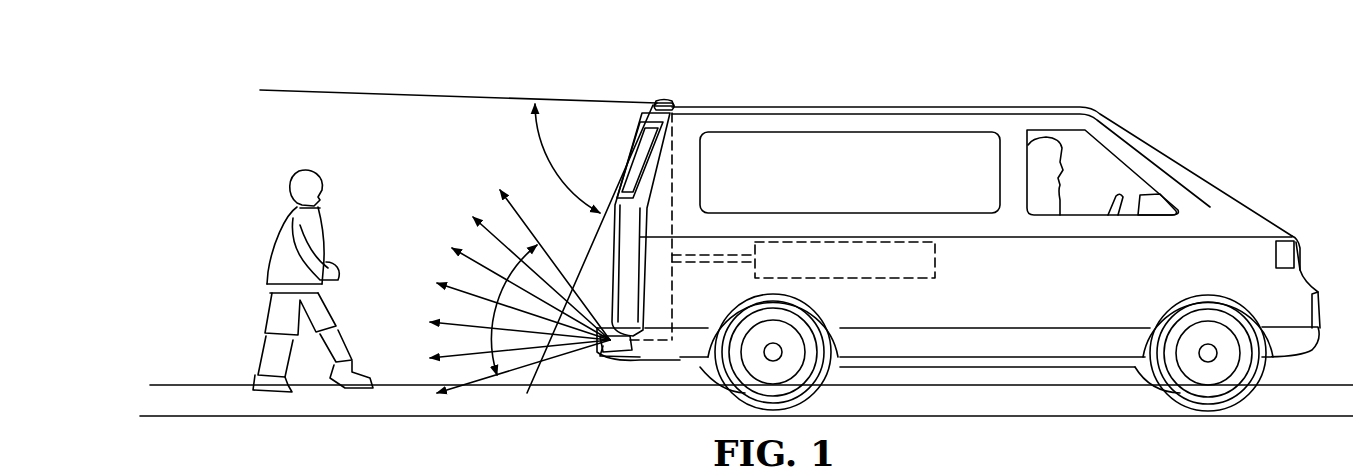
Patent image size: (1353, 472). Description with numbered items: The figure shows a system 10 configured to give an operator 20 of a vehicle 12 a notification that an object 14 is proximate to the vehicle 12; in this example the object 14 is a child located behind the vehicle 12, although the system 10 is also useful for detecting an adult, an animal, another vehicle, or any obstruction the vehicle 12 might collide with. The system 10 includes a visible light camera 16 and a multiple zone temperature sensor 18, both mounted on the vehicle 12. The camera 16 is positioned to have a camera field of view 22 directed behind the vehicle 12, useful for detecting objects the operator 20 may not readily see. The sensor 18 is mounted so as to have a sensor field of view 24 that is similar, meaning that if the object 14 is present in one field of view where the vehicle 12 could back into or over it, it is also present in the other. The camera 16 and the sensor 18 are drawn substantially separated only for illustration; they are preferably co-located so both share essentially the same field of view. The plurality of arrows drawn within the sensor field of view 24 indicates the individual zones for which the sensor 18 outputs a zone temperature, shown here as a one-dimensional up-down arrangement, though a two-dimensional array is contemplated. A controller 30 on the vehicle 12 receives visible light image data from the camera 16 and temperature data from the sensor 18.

The system 10 is at (526, 80).
The vehicle 12 is at (1000, 107).
The object 14 is at (274, 204).
The visible light camera 16 is at (668, 100).
The multiple zone temperature sensor 18 is at (613, 350).
The operator 20 is at (1063, 150).
The camera field of view 22 is at (532, 130).
The sensor field of view 24 is at (535, 245).
The controller 30 is at (937, 262).